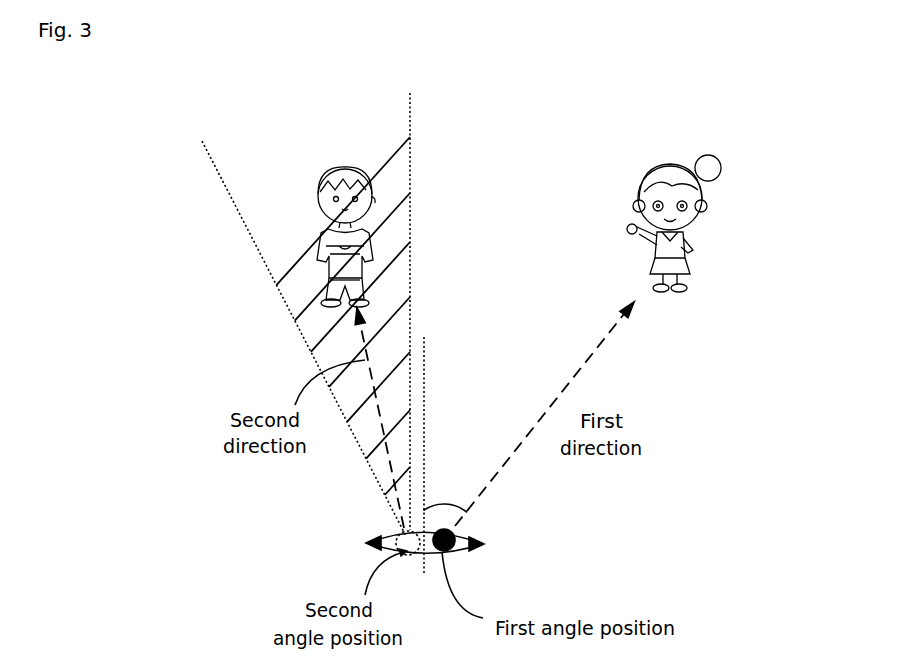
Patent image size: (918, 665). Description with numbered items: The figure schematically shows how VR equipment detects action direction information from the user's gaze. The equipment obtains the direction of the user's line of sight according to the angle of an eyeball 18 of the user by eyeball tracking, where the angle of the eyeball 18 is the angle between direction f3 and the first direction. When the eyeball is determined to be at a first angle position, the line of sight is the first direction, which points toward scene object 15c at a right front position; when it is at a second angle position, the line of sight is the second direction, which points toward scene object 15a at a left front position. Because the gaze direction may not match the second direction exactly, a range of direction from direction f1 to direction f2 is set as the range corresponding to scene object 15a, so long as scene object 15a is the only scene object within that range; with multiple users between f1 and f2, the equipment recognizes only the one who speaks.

The scene object 15a is at (346, 226).
The scene object 15c is at (674, 201).
The eyeball 18 is at (445, 494).
The direction f1 is at (300, 323).
The direction f2 is at (415, 294).
The direction f3 is at (440, 449).